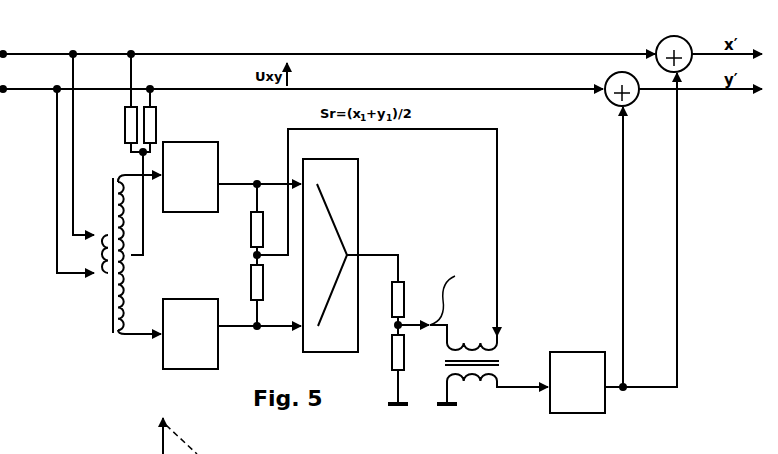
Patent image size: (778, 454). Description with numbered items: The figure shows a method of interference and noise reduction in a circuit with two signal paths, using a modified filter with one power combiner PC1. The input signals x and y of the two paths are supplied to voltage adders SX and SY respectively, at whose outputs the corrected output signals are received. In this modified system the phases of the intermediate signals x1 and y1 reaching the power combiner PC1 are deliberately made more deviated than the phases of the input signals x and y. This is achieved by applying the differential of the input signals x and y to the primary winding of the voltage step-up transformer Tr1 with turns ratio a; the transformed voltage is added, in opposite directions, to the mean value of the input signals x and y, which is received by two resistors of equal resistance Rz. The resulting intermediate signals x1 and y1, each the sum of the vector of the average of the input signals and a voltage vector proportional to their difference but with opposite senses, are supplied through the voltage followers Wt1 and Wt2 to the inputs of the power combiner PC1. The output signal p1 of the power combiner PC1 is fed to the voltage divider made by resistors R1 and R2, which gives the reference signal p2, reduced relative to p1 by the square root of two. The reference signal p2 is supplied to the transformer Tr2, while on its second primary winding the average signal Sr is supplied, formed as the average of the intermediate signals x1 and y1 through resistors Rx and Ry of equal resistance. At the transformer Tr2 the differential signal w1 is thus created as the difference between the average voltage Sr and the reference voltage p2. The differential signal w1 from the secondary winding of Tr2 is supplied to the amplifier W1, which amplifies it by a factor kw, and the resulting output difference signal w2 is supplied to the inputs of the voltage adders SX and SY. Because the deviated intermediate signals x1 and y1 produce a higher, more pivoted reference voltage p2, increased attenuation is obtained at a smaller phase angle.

The input signal x is at (327, 44).
The input signal y is at (301, 80).
The voltage adder SX is at (667, 52).
The voltage adder SY is at (609, 95).
The resistors of equal resistance Rz is at (140, 104).
The voltage step-up transformer Tr1 is at (113, 254).
The voltage follower Wt1 is at (190, 177).
The voltage follower Wt2 is at (190, 334).
The intermediate signal x1 is at (259, 174).
The intermediate signal y1 is at (259, 338).
The resistor Rx is at (268, 221).
The resistor Ry is at (267, 290).
The power combiner PC1 is at (330, 255).
The output signal p1 is at (376, 257).
The reference signal p2 is at (435, 305).
The resistor R1 is at (413, 308).
The resistor R2 is at (411, 369).
The transformer Tr2 is at (468, 362).
The differential signal w1 is at (522, 381).
The amplifier W1 is at (577, 382).
The output difference signal w2 is at (641, 231).